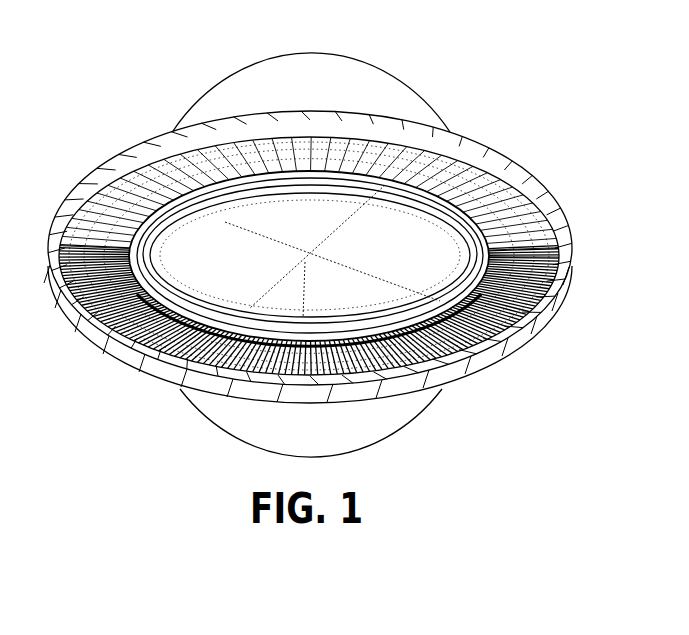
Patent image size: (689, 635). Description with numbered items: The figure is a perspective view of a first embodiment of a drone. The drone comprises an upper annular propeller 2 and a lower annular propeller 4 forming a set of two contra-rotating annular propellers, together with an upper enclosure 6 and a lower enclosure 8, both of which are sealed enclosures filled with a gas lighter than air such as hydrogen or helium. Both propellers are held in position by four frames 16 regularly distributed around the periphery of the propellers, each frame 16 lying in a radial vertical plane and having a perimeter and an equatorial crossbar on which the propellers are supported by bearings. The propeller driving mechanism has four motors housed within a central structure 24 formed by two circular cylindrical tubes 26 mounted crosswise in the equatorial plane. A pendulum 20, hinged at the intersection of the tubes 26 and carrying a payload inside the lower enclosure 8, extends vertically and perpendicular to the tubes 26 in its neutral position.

The upper annular propeller 2 is at (478, 144).
The lower annular propeller 4 is at (510, 353).
The upper enclosure 6 is at (343, 57).
The lower enclosure 8 is at (397, 433).
The frame 16 is at (537, 313).
The pendulum 20 is at (302, 312).
The central structure 24 is at (307, 256).
The tube 26 is at (337, 264).